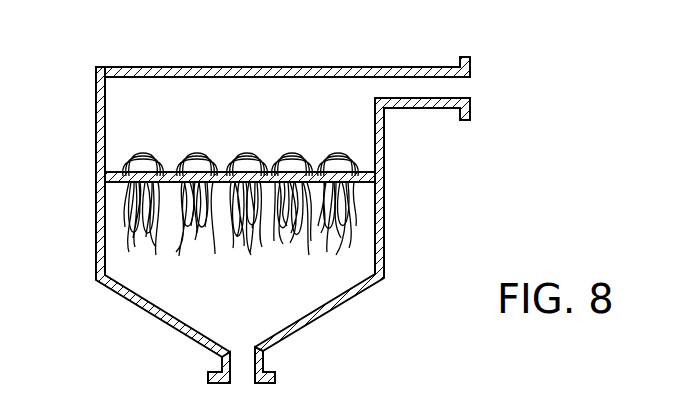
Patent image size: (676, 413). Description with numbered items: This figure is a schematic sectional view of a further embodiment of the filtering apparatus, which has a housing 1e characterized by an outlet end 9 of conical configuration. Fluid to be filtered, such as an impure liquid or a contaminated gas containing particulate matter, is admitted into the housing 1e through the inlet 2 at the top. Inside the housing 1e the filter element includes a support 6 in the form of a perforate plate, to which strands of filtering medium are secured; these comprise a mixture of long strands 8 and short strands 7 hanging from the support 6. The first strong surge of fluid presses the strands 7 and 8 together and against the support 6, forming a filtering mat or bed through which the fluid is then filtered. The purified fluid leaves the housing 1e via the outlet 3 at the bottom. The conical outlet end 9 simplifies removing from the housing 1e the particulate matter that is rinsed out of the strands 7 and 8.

The housing 1e is at (97, 128).
The inlet 2 is at (428, 68).
The outlet 3 is at (263, 362).
The support 6 is at (385, 178).
The short strands 7 is at (205, 255).
The long strands 8 is at (165, 240).
The outlet end 9 is at (348, 300).